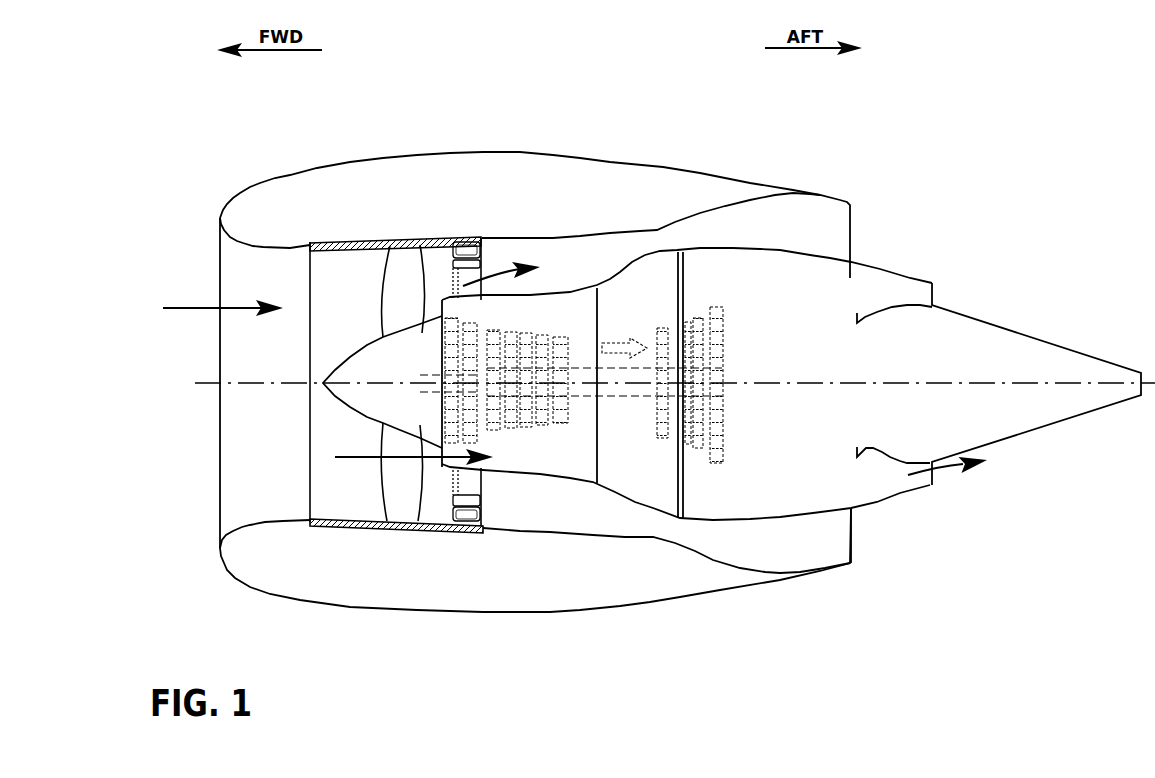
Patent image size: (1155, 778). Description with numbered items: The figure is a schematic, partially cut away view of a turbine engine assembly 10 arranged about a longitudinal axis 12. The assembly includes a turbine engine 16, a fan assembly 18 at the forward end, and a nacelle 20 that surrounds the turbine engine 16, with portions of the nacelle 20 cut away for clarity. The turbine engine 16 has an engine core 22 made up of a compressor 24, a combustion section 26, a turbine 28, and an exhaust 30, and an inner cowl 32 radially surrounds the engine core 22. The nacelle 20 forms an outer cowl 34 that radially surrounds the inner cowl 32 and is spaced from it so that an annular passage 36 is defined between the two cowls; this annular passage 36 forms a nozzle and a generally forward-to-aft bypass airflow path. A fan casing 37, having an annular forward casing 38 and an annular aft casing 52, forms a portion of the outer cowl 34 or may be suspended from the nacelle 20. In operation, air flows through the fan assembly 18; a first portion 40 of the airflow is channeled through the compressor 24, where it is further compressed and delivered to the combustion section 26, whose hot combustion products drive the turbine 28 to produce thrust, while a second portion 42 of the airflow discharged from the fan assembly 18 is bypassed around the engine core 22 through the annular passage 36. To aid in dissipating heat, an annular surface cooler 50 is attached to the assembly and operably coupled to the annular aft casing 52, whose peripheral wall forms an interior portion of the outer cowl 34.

The turbine engine assembly 10 is at (413, 103).
The longitudinal axis 12 is at (205, 384).
The turbine engine 16 is at (580, 308).
The fan assembly 18 is at (397, 258).
The nacelle 20 is at (292, 176).
The engine core 22 is at (587, 455).
The compressor 24 is at (522, 427).
The combustion section 26 is at (620, 407).
The turbine 28 is at (695, 437).
The exhaust 30 is at (895, 489).
The inner cowl 32 is at (688, 253).
The outer cowl 34 is at (700, 212).
The annular passage 36 is at (808, 553).
The fan casing 37 is at (318, 483).
The annular forward casing 38 is at (310, 453).
The first portion of the airflow 40 is at (433, 527).
The second portion of the airflow 42 is at (497, 277).
The surface cooler 50 is at (474, 491).
The annular aft casing 52 is at (466, 228).